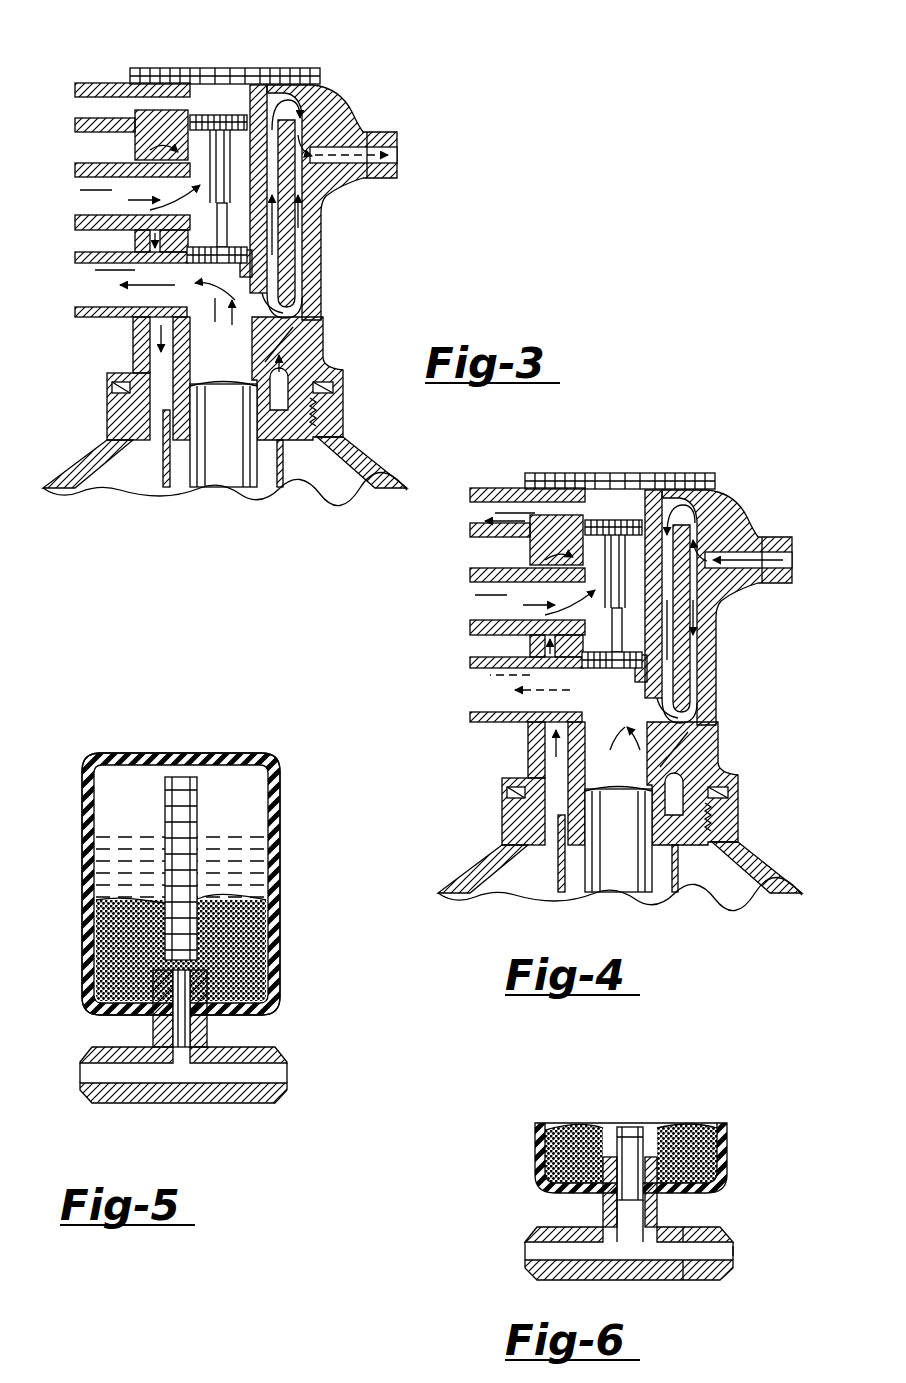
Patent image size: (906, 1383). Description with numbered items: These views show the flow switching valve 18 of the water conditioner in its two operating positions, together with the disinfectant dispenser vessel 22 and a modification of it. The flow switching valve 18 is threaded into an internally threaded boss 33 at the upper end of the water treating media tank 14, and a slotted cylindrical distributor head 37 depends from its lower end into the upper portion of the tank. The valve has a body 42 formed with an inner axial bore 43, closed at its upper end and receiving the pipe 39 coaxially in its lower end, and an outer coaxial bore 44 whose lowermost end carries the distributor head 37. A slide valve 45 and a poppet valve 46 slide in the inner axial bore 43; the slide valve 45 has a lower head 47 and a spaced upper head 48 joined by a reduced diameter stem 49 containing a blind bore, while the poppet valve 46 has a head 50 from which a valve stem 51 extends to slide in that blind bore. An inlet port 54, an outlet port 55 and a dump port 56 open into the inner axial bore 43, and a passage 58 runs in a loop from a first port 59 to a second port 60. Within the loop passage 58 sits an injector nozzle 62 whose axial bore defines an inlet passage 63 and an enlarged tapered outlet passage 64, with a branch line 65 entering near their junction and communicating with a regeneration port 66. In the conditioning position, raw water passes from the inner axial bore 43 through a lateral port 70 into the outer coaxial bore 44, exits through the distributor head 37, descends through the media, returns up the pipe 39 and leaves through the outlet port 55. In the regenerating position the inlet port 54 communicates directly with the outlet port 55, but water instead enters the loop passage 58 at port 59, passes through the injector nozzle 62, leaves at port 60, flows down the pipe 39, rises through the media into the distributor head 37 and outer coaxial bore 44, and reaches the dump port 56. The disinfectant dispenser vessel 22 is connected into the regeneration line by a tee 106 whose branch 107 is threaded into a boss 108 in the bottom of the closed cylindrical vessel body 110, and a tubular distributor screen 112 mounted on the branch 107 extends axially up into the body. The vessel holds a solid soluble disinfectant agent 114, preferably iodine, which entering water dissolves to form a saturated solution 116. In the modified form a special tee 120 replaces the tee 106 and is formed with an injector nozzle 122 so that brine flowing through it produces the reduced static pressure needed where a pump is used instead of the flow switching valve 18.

In FIG. 3, the water treating media tank 14 is at (385, 452).
In FIG. 4, the water treating media tank 14 is at (643, 871).
In FIG. 3, the flow switching valve 18 is at (385, 262).
In FIG. 4, the flow switching valve 18 is at (685, 560).
In FIG. 5, the disinfectant dispenser vessel 22 is at (283, 770).
In FIG. 3, the internally threaded boss 33 is at (342, 407).
In FIG. 4, the internally threaded boss 33 is at (747, 802).
In FIG. 3, the distributor head 37 is at (295, 475).
In FIG. 4, the distributor head 37 is at (701, 890).
In FIG. 3, the pipe 39 is at (258, 480).
In FIG. 4, the pipe 39 is at (628, 836).
In FIG. 3, the body 42 is at (300, 333).
In FIG. 4, the body 42 is at (741, 783).
In FIG. 3, the inner axial bore 43 is at (238, 100).
In FIG. 4, the inner axial bore 43 is at (675, 563).
In FIG. 3, the outer coaxial bore 44 is at (158, 360).
In FIG. 4, the outer coaxial bore 44 is at (523, 807).
In FIG. 3, the slide valve 45 is at (218, 115).
In FIG. 4, the slide valve 45 is at (613, 466).
In FIG. 3, the poppet valve 46 is at (288, 302).
In FIG. 4, the poppet valve 46 is at (732, 714).
In FIG. 3, the lower head 47 is at (150, 240).
In FIG. 4, the lower head 47 is at (530, 644).
In FIG. 3, the upper head 48 is at (201, 112).
In FIG. 4, the upper head 48 is at (634, 534).
In FIG. 3, the reduced diameter stem 49 is at (189, 135).
In FIG. 4, the reduced diameter stem 49 is at (631, 552).
In FIG. 3, the head 50 is at (253, 262).
In FIG. 4, the head 50 is at (698, 685).
In FIG. 3, the valve stem 51 is at (275, 252).
In FIG. 4, the valve stem 51 is at (718, 630).
In FIG. 3, the inlet port 54 is at (78, 188).
In FIG. 4, the inlet port 54 is at (512, 597).
In FIG. 3, the outlet port 55 is at (80, 285).
In FIG. 4, the outlet port 55 is at (504, 689).
In FIG. 3, the dump port 56 is at (82, 105).
In FIG. 4, the dump port 56 is at (510, 494).
In FIG. 3, the passage 58 is at (292, 310).
In FIG. 4, the passage 58 is at (725, 685).
In FIG. 3, the first port 59 is at (300, 325).
In FIG. 4, the first port 59 is at (740, 718).
In FIG. 3, the second port 60 is at (282, 355).
In FIG. 4, the second port 60 is at (719, 775).
In FIG. 3, the injector nozzle 62 is at (320, 183).
In FIG. 4, the injector nozzle 62 is at (730, 607).
In FIG. 3, the inlet passage 63 is at (296, 128).
In FIG. 4, the inlet passage 63 is at (715, 496).
In FIG. 3, the enlarged tapered outlet passage 64 is at (297, 232).
In FIG. 4, the enlarged tapered outlet passage 64 is at (721, 618).
In FIG. 3, the branch line 65 is at (315, 150).
In FIG. 4, the branch line 65 is at (739, 518).
In FIG. 3, the regeneration port 66 is at (388, 145).
In FIG. 4, the regeneration port 66 is at (768, 546).
In FIG. 3, the lateral port 70 is at (150, 150).
In FIG. 4, the lateral port 70 is at (530, 540).
In FIG. 5, the tee 106 is at (200, 1105).
In FIG. 5, the branch 107 is at (208, 1027).
In FIG. 5, the boss 108 is at (200, 988).
In FIG. 6, the boss 108 is at (652, 1170).
In FIG. 5, the vessel body 110 is at (83, 896).
In FIG. 6, the vessel body 110 is at (536, 1146).
In FIG. 5, the tubular distributor screen 112 is at (198, 788).
In FIG. 6, the tubular distributor screen 112 is at (644, 1130).
In FIG. 5, the soluble disinfectant agent 114 is at (269, 929).
In FIG. 6, the soluble disinfectant agent 114 is at (719, 1133).
In FIG. 5, the saturated solution 116 is at (269, 851).
In FIG. 6, the special tee 120 is at (557, 1226).
In FIG. 6, the injector nozzle 122 is at (719, 1229).